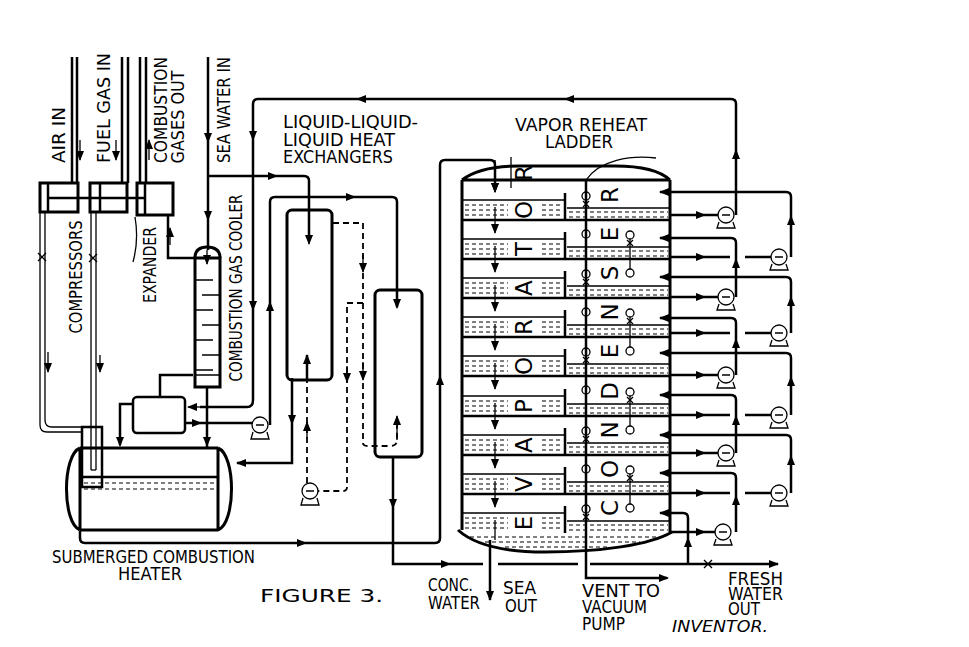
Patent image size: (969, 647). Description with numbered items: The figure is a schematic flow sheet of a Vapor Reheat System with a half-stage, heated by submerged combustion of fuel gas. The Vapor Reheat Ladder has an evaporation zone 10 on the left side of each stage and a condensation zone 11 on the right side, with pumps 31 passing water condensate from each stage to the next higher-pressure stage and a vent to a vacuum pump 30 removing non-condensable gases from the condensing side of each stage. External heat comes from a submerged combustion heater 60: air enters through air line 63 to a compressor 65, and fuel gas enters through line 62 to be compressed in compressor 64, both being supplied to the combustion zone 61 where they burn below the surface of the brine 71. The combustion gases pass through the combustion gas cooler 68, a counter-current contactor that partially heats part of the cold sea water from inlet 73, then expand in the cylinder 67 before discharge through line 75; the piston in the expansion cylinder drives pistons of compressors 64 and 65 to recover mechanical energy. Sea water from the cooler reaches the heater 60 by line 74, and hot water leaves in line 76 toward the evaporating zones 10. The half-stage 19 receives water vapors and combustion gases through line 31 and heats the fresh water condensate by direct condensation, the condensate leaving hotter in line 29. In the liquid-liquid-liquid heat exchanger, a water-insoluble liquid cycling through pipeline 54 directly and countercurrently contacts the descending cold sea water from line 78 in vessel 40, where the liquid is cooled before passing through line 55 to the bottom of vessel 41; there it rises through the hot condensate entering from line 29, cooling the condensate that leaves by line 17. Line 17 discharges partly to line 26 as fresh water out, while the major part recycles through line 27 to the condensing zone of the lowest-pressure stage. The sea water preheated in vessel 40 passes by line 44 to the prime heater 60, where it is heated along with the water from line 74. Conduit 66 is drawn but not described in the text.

The evaporation zone 10 is at (511, 162).
The condensation zone 11 is at (673, 180).
The line 17 is at (395, 527).
The half-stage 19 is at (151, 396).
The line 26 is at (728, 565).
The line 27 is at (690, 522).
The line 29 is at (398, 206).
The vent to vacuum pump 30 is at (645, 363).
The pump 31 is at (129, 405).
The vessel 40 is at (317, 254).
The vessel 41 is at (405, 295).
The line 44 is at (272, 466).
The pipeline 54 is at (344, 466).
The line 55 is at (364, 266).
The submerged combustion heater 60 is at (67, 490).
The combustion zone 61 is at (81, 450).
The line 62 is at (131, 63).
The air line 63 is at (72, 88).
The compressor 64 is at (113, 216).
The compressor 65 is at (40, 200).
The conduit 66 is at (133, 262).
The expansion cylinder 67 is at (173, 204).
The combustion gas cooler 68 is at (195, 333).
The brine 71 is at (105, 486).
The cold sea water inlet 73 is at (208, 78).
The line 74 is at (210, 438).
The line 75 is at (148, 66).
The line 76 is at (324, 543).
The line 78 is at (254, 160).